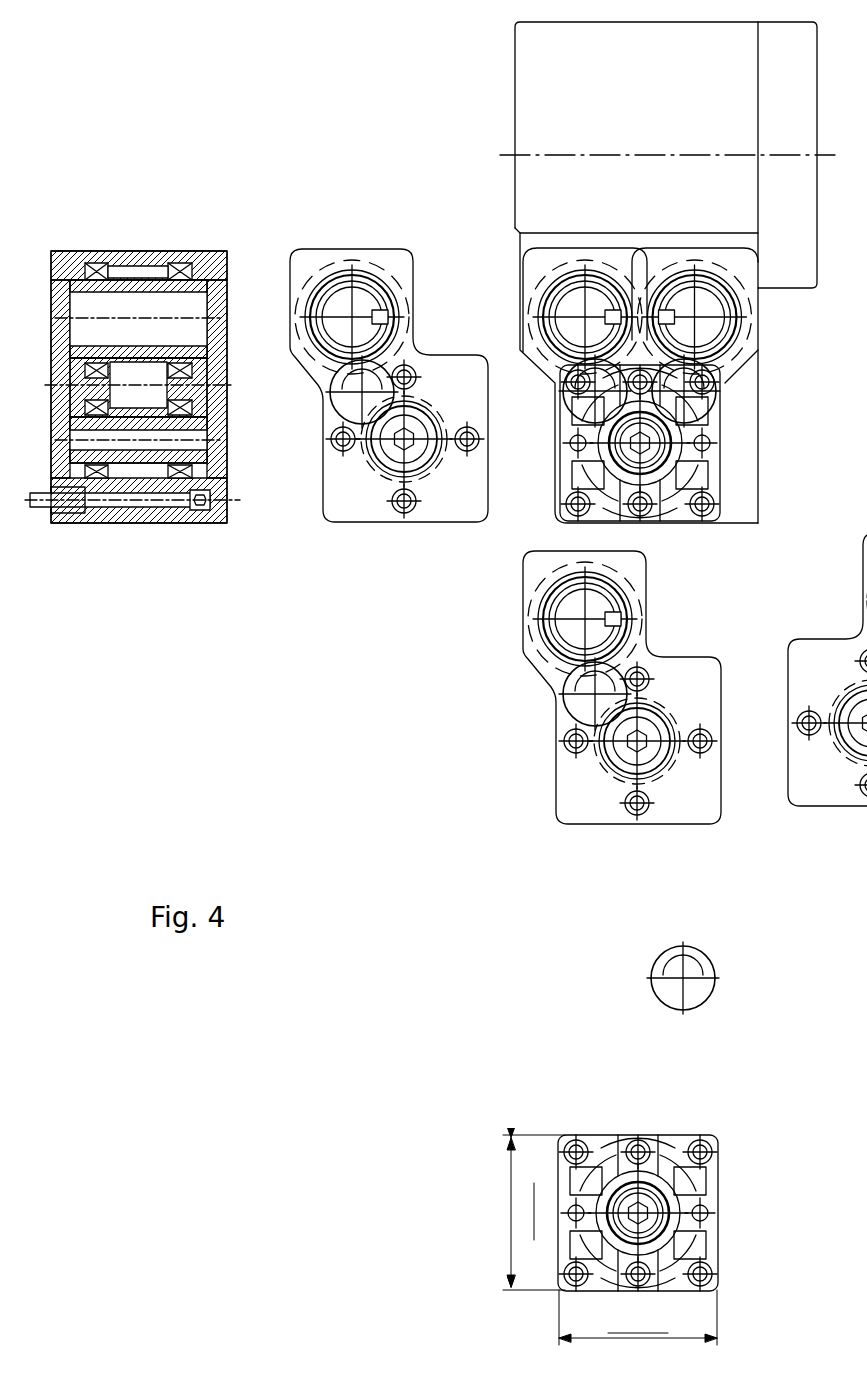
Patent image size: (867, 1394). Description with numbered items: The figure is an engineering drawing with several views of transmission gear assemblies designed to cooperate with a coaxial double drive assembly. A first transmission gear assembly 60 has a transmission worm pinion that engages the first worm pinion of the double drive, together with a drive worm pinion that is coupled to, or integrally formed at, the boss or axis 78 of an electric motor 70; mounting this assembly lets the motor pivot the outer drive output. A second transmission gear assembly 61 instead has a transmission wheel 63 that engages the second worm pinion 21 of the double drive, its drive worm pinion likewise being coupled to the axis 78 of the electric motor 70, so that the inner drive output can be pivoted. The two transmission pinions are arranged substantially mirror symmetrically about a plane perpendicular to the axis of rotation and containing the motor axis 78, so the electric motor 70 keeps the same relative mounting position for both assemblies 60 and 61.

The second worm pinion 21 is at (686, 893).
The transmission wheel 63 is at (692, 992).
The first transmission gear assembly 60 is at (585, 687).
The second transmission gear assembly 61 is at (637, 792).
The electric motor 70 is at (593, 1240).
The axis or boss of the electric motor 78 is at (642, 1208).